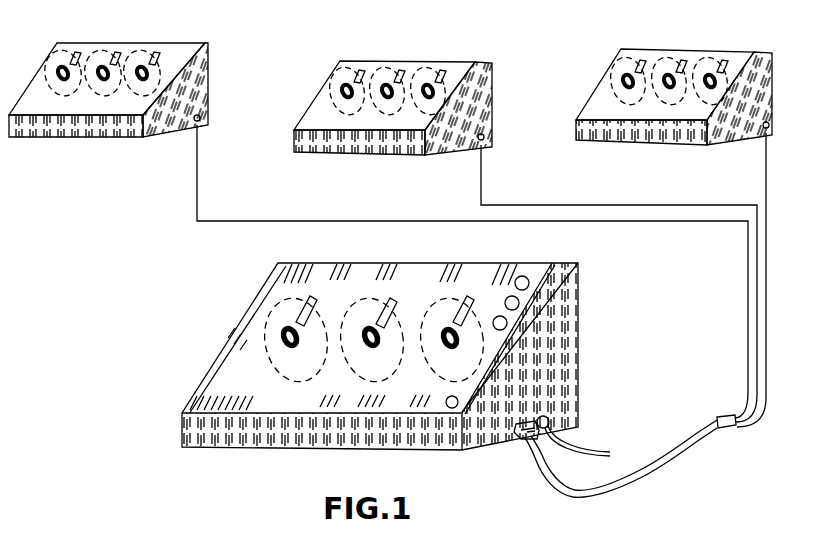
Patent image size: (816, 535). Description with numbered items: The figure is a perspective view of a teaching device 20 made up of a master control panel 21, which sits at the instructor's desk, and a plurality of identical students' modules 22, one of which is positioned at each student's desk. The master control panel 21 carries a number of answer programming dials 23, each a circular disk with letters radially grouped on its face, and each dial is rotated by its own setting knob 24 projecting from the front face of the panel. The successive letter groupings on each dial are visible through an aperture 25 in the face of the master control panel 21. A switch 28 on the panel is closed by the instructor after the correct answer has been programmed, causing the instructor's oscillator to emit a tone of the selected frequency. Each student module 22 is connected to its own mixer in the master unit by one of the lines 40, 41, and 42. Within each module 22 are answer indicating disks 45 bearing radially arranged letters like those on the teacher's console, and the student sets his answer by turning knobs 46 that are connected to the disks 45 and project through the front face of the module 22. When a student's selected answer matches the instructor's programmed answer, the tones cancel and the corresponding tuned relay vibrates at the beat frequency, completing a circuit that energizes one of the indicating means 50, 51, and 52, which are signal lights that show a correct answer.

The teaching device 20 is at (440, 276).
The master control panel 21 is at (440, 370).
The student module 22 is at (108, 97).
The answer programming dial 23 is at (393, 387).
The setting knob 24 is at (443, 338).
The aperture 25 is at (465, 304).
The switch 28 is at (452, 409).
The line 40 is at (197, 180).
The line 41 is at (481, 181).
The line 42 is at (766, 155).
The answer indicating disk 45 is at (115, 100).
The knob 46 is at (142, 68).
The indicating means 50 is at (526, 277).
The indicating means 51 is at (518, 308).
The indicating means 52 is at (500, 330).